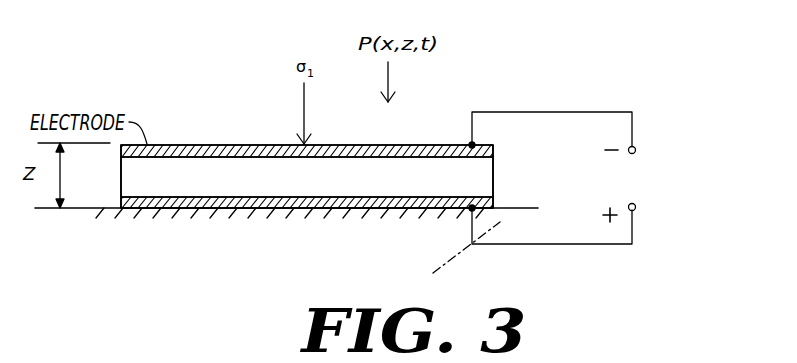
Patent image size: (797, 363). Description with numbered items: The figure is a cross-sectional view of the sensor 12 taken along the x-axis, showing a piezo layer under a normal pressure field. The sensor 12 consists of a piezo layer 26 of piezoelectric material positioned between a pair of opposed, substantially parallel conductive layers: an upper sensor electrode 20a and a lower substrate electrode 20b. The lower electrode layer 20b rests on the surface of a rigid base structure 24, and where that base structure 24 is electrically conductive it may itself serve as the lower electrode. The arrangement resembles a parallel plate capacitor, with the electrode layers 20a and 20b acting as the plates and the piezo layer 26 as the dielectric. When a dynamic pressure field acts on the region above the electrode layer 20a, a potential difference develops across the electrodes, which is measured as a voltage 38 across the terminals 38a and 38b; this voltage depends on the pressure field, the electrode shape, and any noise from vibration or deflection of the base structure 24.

The sensor 12 is at (487, 61).
The conductive layer (sensor electrode) 20a is at (166, 145).
The conductive layer (substrate electrode) 20b is at (177, 208).
The piezo layer 26 is at (135, 178).
The rigid base structure 24 is at (405, 211).
The voltage 38 is at (625, 178).
The terminal 38a is at (636, 148).
The terminal 38b is at (636, 209).